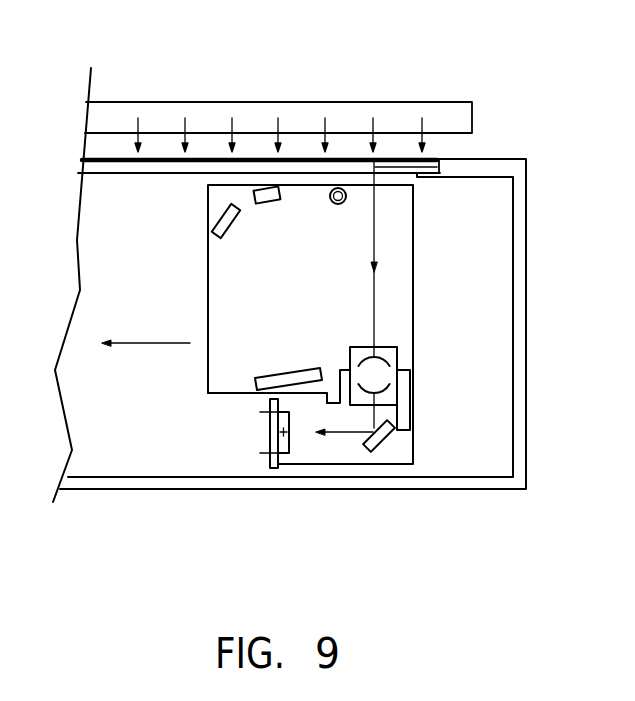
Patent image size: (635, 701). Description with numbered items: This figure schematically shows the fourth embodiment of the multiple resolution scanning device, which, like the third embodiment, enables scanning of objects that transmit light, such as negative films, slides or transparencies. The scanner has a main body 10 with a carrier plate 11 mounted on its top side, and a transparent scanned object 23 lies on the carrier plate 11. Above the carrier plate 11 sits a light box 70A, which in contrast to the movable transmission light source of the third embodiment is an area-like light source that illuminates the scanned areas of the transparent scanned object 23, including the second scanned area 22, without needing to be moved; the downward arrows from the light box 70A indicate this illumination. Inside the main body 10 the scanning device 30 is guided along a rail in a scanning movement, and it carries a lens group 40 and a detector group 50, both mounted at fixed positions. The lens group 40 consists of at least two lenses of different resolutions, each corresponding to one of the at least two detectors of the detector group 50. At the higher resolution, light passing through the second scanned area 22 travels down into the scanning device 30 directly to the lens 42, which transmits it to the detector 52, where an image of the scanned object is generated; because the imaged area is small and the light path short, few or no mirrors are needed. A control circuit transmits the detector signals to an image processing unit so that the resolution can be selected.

The main body 10 is at (107, 490).
The carrier plate 11 is at (118, 165).
The second scanned area 22 is at (372, 160).
The transparent scanned object 23 is at (306, 158).
The scanning device 30 is at (430, 260).
The lens group 40 is at (438, 363).
The lens 42 is at (392, 388).
The detector group 50 is at (283, 480).
The detector 52 is at (273, 460).
The light box 70A is at (236, 89).